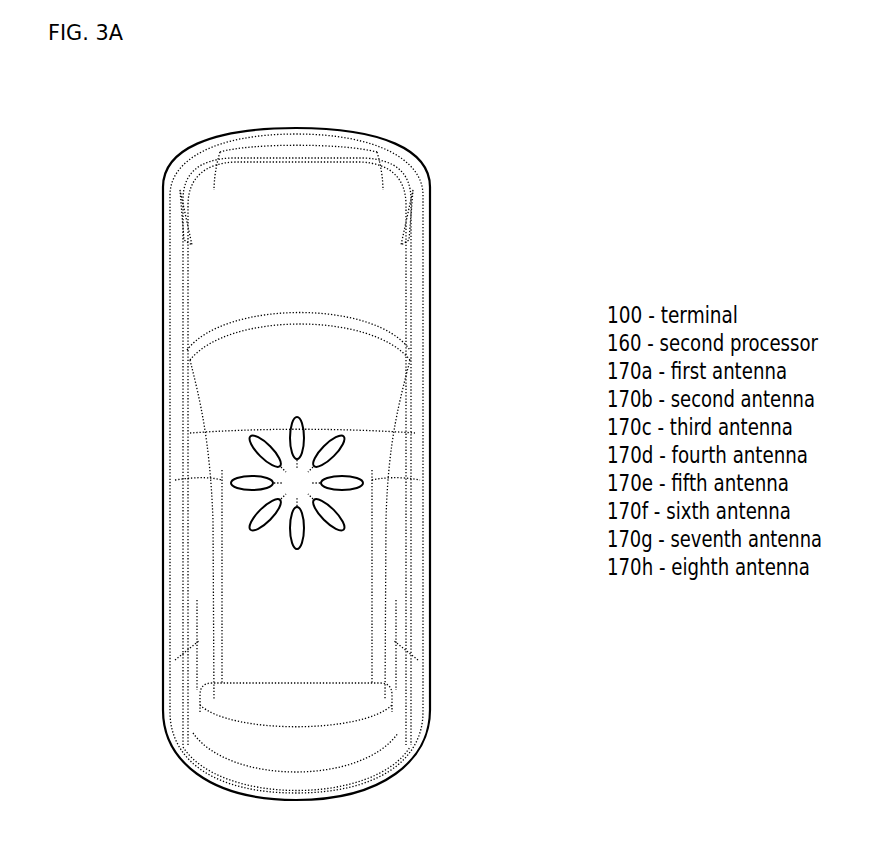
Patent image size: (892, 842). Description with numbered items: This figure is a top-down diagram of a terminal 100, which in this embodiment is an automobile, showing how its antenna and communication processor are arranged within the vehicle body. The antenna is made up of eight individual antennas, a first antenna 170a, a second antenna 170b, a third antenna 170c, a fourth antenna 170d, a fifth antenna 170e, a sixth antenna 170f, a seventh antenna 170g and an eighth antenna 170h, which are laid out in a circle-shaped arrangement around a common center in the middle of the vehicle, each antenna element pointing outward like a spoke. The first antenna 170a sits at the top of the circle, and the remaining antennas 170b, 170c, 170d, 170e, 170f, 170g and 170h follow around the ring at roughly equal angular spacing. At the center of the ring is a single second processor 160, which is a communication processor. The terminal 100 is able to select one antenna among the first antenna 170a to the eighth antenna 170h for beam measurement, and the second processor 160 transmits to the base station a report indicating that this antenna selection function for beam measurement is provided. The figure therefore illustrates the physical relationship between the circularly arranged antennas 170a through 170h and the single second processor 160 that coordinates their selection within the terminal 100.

The terminal 100 is at (310, 128).
The second processor 160 is at (292, 508).
The first antenna 170a is at (297, 417).
The second antenna 170b is at (344, 438).
The third antenna 170c is at (363, 483).
The fourth antenna 170d is at (344, 530).
The fifth antenna 170e is at (299, 551).
The sixth antenna 170f is at (252, 528).
The seventh antenna 170g is at (232, 483).
The eighth antenna 170h is at (250, 436).